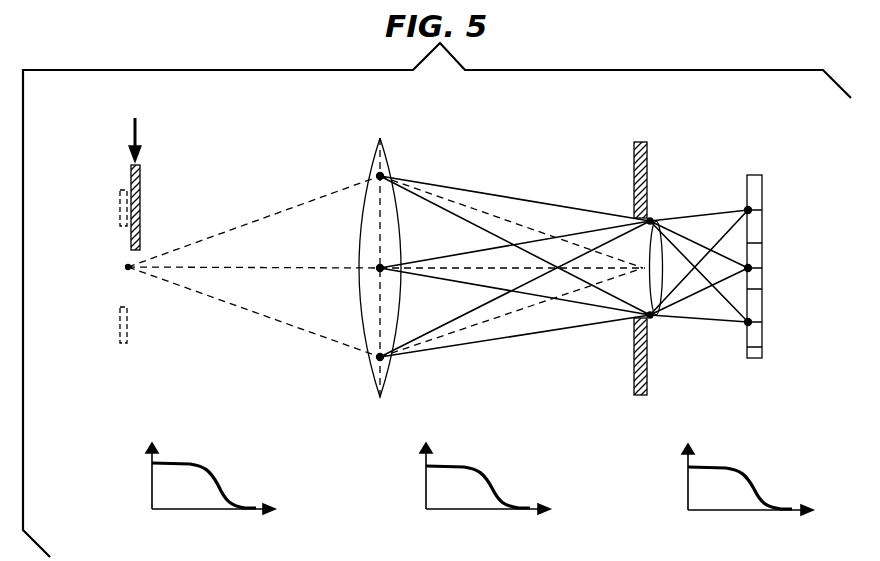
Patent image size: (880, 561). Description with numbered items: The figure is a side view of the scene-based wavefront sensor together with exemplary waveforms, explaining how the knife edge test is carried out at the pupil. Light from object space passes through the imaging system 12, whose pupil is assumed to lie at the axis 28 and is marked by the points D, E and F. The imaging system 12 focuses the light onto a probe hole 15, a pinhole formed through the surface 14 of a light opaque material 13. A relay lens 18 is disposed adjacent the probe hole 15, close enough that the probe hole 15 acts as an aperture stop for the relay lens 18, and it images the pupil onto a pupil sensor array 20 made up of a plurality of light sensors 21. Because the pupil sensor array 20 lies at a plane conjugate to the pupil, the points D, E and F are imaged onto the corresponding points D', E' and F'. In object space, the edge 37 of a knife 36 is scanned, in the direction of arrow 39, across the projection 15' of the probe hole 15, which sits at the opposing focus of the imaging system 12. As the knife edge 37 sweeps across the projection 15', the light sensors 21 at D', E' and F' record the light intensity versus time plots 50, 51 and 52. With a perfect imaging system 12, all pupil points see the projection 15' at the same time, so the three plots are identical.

The imaging system 12 is at (380, 138).
The light opaque material 13 is at (623, 246).
The surface 14 is at (634, 152).
The probe hole 15 is at (675, 232).
The projection of the probe hole 15' is at (95, 255).
The relay lens 18 is at (660, 226).
The pupil sensor array 20 is at (779, 236).
The light sensors 21 is at (762, 228).
The axis 28 is at (383, 374).
The knife 36 is at (141, 182).
The knife edge 37 is at (141, 251).
The arrow 39 is at (138, 130).
The light intensity versus time plot 50 is at (200, 470).
The light intensity versus time plot 51 is at (475, 470).
The light intensity versus time plot 52 is at (737, 470).